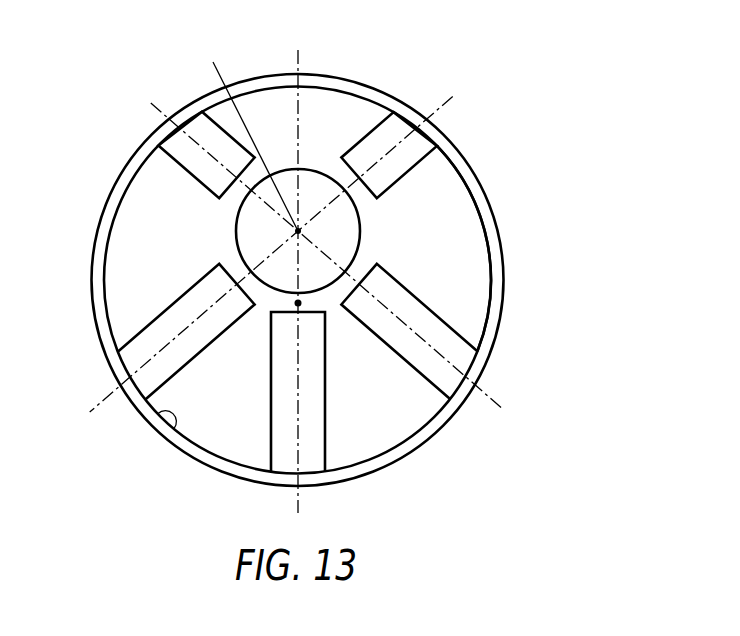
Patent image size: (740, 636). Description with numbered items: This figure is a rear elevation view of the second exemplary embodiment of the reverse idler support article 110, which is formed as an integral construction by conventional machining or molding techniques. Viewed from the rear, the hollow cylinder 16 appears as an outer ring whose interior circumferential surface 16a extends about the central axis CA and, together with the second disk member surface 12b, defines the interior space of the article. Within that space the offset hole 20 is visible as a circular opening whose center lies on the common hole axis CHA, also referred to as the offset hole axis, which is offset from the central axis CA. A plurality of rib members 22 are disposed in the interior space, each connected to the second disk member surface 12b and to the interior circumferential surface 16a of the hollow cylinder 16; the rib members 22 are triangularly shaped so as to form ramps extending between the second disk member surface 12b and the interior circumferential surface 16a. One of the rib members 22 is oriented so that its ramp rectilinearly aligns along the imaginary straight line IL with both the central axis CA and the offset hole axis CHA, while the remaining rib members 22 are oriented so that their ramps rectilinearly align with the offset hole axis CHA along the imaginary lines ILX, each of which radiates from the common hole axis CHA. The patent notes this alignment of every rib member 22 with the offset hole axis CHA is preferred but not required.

The reverse idler support article 110 is at (484, 102).
The hollow cylinder 16 is at (476, 174).
The interior circumferential surface 16a is at (172, 437).
The second disk member surface 12b is at (462, 303).
The offset hole 20 is at (272, 243).
The rib member 22 is at (188, 156).
The imaginary straight line IL is at (297, 269).
The imaginary lines ILX is at (530, 365).
The common hole axis CHA is at (243, 135).
The central axis CA is at (300, 302).